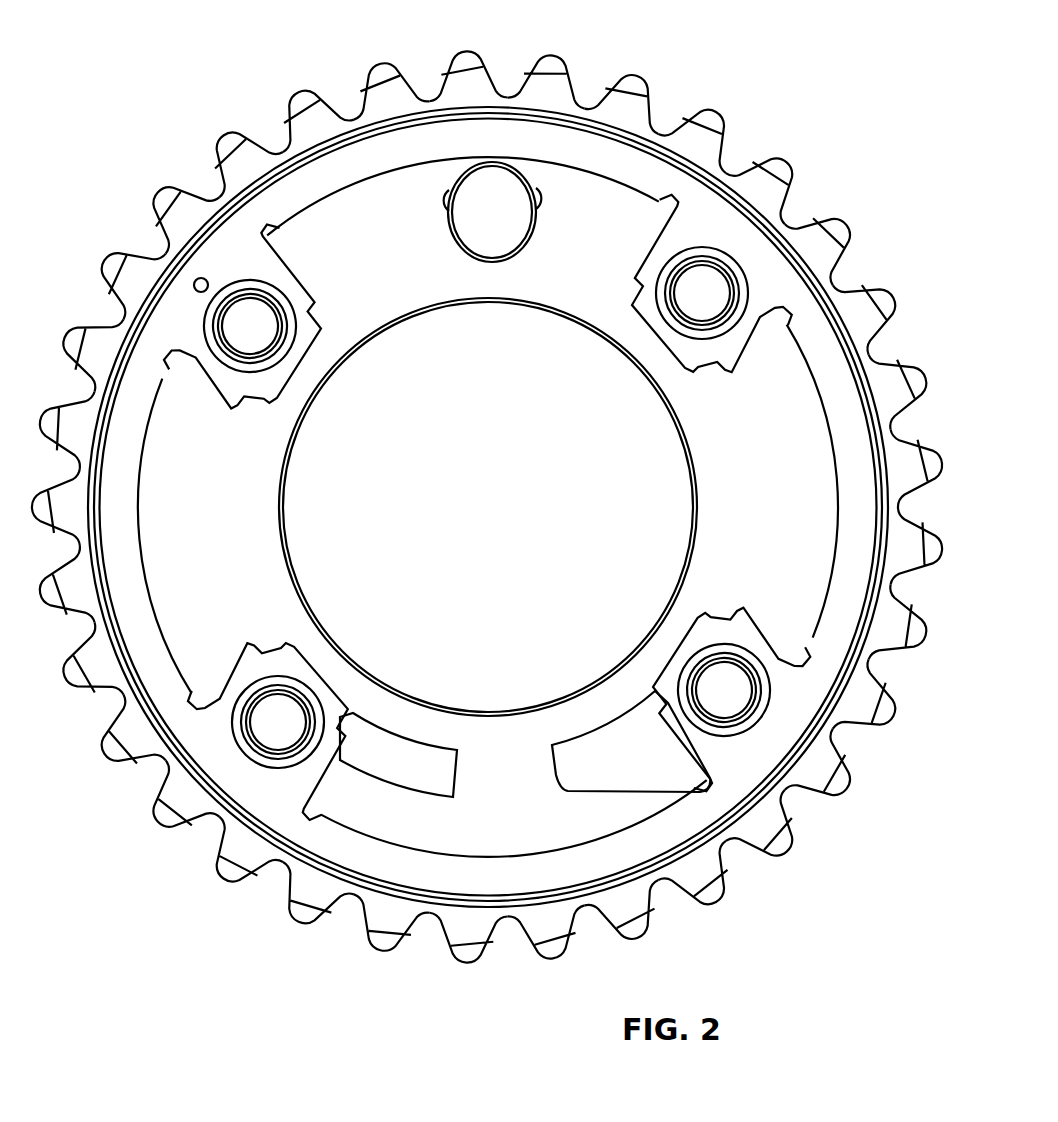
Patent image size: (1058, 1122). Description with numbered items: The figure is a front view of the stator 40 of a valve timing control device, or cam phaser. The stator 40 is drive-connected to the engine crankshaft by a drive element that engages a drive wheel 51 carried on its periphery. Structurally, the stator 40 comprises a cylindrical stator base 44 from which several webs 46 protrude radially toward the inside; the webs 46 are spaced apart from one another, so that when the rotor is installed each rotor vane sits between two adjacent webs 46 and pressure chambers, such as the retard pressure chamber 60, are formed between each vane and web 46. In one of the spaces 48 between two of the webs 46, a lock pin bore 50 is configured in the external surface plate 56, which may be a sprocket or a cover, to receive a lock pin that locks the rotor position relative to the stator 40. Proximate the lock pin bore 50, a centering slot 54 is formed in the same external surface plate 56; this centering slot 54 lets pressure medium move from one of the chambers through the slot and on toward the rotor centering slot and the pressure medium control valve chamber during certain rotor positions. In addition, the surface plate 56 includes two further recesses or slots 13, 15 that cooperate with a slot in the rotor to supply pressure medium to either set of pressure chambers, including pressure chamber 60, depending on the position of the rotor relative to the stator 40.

The slot 13 is at (567, 772).
The slot 15 is at (437, 780).
The stator 40 is at (705, 222).
The stator base 44 is at (143, 512).
The webs 46 is at (220, 382).
The space 48 is at (559, 180).
The lock pin bore 50 is at (517, 257).
The drive wheel 51 is at (850, 230).
The centering slot 54 is at (430, 200).
The external surface plate 56 is at (618, 262).
The pressure chamber 60 is at (316, 232).